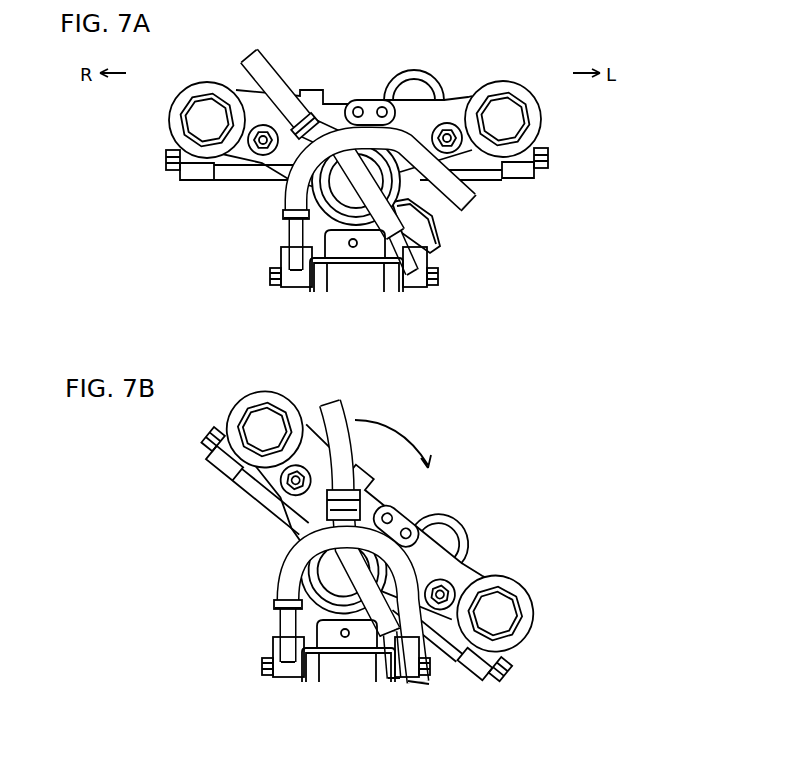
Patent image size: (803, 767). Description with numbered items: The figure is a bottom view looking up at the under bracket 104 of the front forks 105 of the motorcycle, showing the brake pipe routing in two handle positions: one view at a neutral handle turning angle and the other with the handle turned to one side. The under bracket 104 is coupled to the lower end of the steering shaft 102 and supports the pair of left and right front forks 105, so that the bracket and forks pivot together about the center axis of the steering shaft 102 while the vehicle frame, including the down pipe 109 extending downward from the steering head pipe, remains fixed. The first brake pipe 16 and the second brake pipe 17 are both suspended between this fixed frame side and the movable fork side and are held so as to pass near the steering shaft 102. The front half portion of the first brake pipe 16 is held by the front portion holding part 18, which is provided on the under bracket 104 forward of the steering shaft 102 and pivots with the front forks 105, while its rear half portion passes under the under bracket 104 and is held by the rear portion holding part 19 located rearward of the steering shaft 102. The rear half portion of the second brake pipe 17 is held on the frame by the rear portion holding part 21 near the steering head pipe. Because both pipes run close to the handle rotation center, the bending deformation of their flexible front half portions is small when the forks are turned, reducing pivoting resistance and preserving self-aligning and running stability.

In FIG. 7A, the first brake pipe 16 is at (281, 77).
In FIG. 7B, the first brake pipe 16 is at (338, 410).
In FIG. 7A, the second brake pipe 17 is at (480, 197).
In FIG. 7B, the second brake pipe 17 is at (432, 655).
In FIG. 7A, the front portion holding part 18 is at (306, 112).
In FIG. 7B, the front portion holding part 18 is at (345, 500).
In FIG. 7A, the rear portion holding part 19 is at (419, 282).
In FIG. 7B, the rear portion holding part 19 is at (400, 680).
In FIG. 7A, the rear portion holding part 21 is at (293, 282).
In FIG. 7B, the rear portion holding part 21 is at (284, 668).
In FIG. 7A, the steering shaft 102 is at (362, 165).
In FIG. 7B, the steering shaft 102 is at (335, 570).
In FIG. 7A, the under bracket 104 is at (421, 120).
In FIG. 7B, the under bracket 104 is at (432, 565).
In FIG. 7A, the front forks 105 is at (205, 120).
In FIG. 7B, the front forks 105 is at (262, 425).
In FIG. 7A, the down pipe 109 is at (355, 280).
In FIG. 7B, the down pipe 109 is at (340, 666).